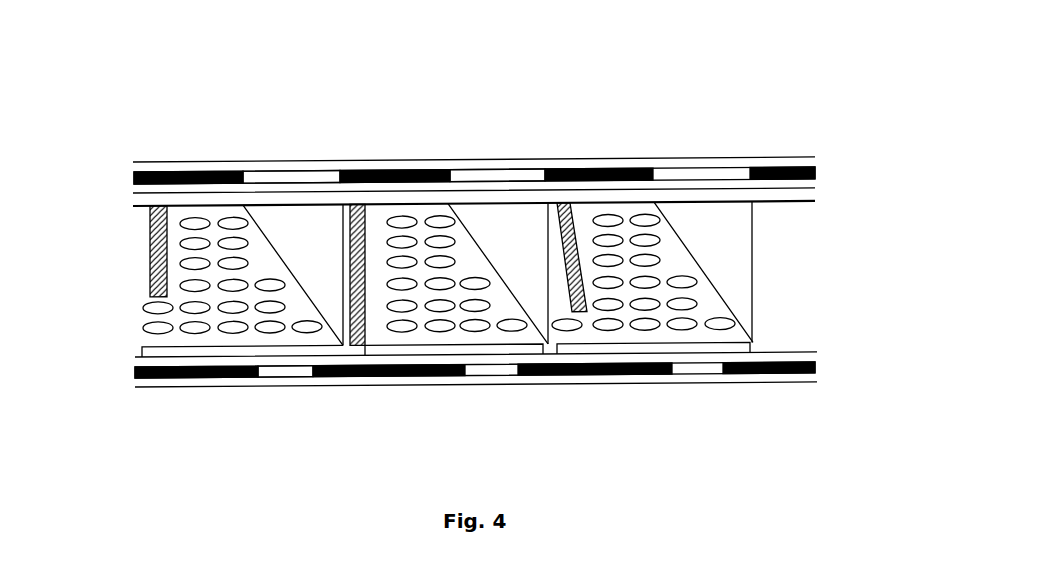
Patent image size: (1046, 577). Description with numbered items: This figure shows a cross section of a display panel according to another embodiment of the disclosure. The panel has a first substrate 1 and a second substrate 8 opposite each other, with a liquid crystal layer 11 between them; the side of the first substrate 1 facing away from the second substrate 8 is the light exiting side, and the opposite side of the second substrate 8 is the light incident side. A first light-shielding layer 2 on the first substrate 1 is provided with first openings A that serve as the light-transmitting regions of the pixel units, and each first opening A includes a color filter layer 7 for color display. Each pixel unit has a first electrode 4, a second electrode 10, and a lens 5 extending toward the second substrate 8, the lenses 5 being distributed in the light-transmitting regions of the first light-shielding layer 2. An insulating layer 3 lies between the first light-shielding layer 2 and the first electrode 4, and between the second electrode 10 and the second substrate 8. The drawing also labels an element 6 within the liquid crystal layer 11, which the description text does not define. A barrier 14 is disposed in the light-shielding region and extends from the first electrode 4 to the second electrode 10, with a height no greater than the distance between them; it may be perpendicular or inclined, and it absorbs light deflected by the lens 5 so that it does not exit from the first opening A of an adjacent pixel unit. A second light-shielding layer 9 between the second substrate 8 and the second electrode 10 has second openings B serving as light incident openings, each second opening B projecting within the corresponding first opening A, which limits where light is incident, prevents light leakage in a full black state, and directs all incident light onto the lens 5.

The first substrate 1 is at (817, 160).
The first light-shielding layer 2 is at (133, 178).
The insulating layer 3 is at (817, 182).
The first electrode 4 is at (133, 198).
The lens 5 is at (752, 287).
The liquid crystal molecules 6 is at (158, 307).
The color filter layer 7 is at (285, 173).
The second substrate 8 is at (815, 372).
The second light-shielding layer 9 is at (135, 372).
The second electrode 10 is at (140, 347).
The liquid crystal layer 11 is at (883, 198).
The barrier 14 is at (150, 262).
The first opening A is at (544, 163).
The second opening B is at (313, 388).